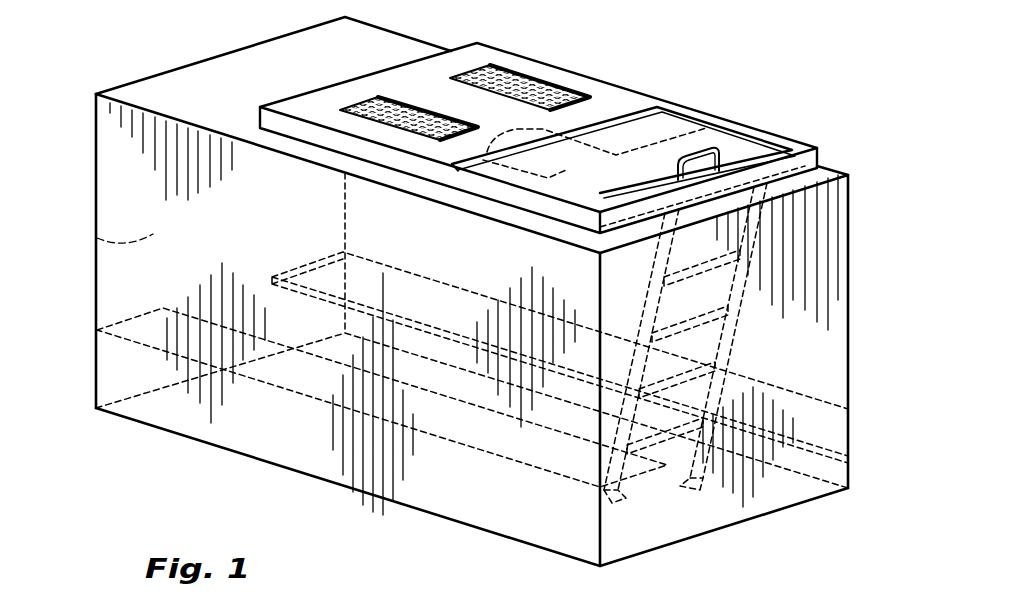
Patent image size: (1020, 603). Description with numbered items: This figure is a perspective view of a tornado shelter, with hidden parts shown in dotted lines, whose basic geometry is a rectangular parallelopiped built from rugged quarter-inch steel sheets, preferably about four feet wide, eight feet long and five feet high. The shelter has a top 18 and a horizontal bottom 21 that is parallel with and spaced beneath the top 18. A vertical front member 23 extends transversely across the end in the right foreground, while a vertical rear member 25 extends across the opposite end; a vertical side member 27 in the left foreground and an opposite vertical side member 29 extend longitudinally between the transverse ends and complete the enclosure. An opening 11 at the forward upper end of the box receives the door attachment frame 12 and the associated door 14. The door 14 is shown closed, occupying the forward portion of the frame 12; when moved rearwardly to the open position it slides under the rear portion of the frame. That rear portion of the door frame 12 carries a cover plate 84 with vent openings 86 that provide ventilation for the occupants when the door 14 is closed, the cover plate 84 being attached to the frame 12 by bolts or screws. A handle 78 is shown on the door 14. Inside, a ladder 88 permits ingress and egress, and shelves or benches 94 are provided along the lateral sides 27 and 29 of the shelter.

The opening 11 is at (733, 122).
The door attachment frame 12 is at (778, 138).
The door 14 is at (635, 131).
The top 18 is at (210, 75).
The horizontal bottom 21 is at (478, 495).
The vertical front member 23 is at (823, 378).
The vertical rear member 25 is at (97, 238).
The vertical side member 27 is at (273, 432).
The opposite vertical side member 29 is at (815, 268).
The handle 78 is at (680, 155).
The cover plate 84 is at (477, 57).
The vent openings 86 is at (525, 83).
The ladder 88 is at (695, 485).
The shelves or benches 94 is at (776, 378).